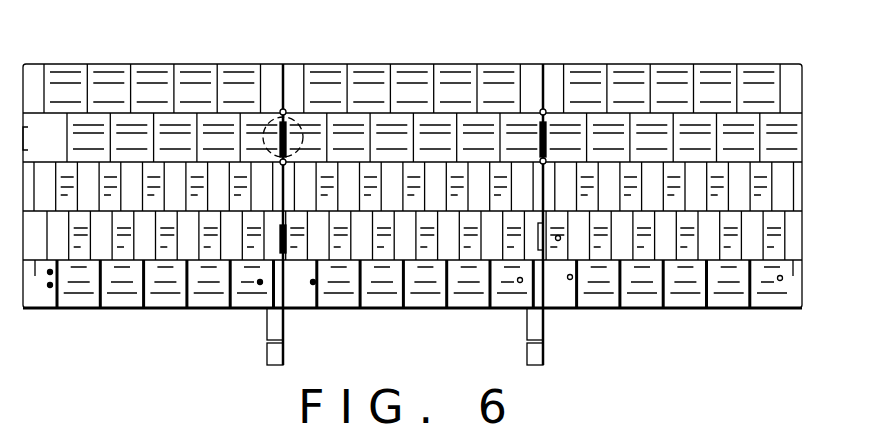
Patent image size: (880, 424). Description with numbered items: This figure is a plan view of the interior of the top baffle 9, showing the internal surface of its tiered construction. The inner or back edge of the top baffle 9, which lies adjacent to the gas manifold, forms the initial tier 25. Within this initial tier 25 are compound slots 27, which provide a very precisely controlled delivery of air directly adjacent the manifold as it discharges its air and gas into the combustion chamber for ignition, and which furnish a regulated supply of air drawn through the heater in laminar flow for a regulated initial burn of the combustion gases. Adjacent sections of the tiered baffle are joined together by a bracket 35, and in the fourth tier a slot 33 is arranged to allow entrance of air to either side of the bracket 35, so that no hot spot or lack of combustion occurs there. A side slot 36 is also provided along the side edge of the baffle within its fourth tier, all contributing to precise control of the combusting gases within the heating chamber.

The top baffle 9 is at (260, 133).
The initial tier 25 is at (120, 285).
The compound slots 27 is at (663, 280).
The slot 33 is at (273, 133).
The bracket 35 is at (285, 328).
The side slot 36 is at (287, 138).